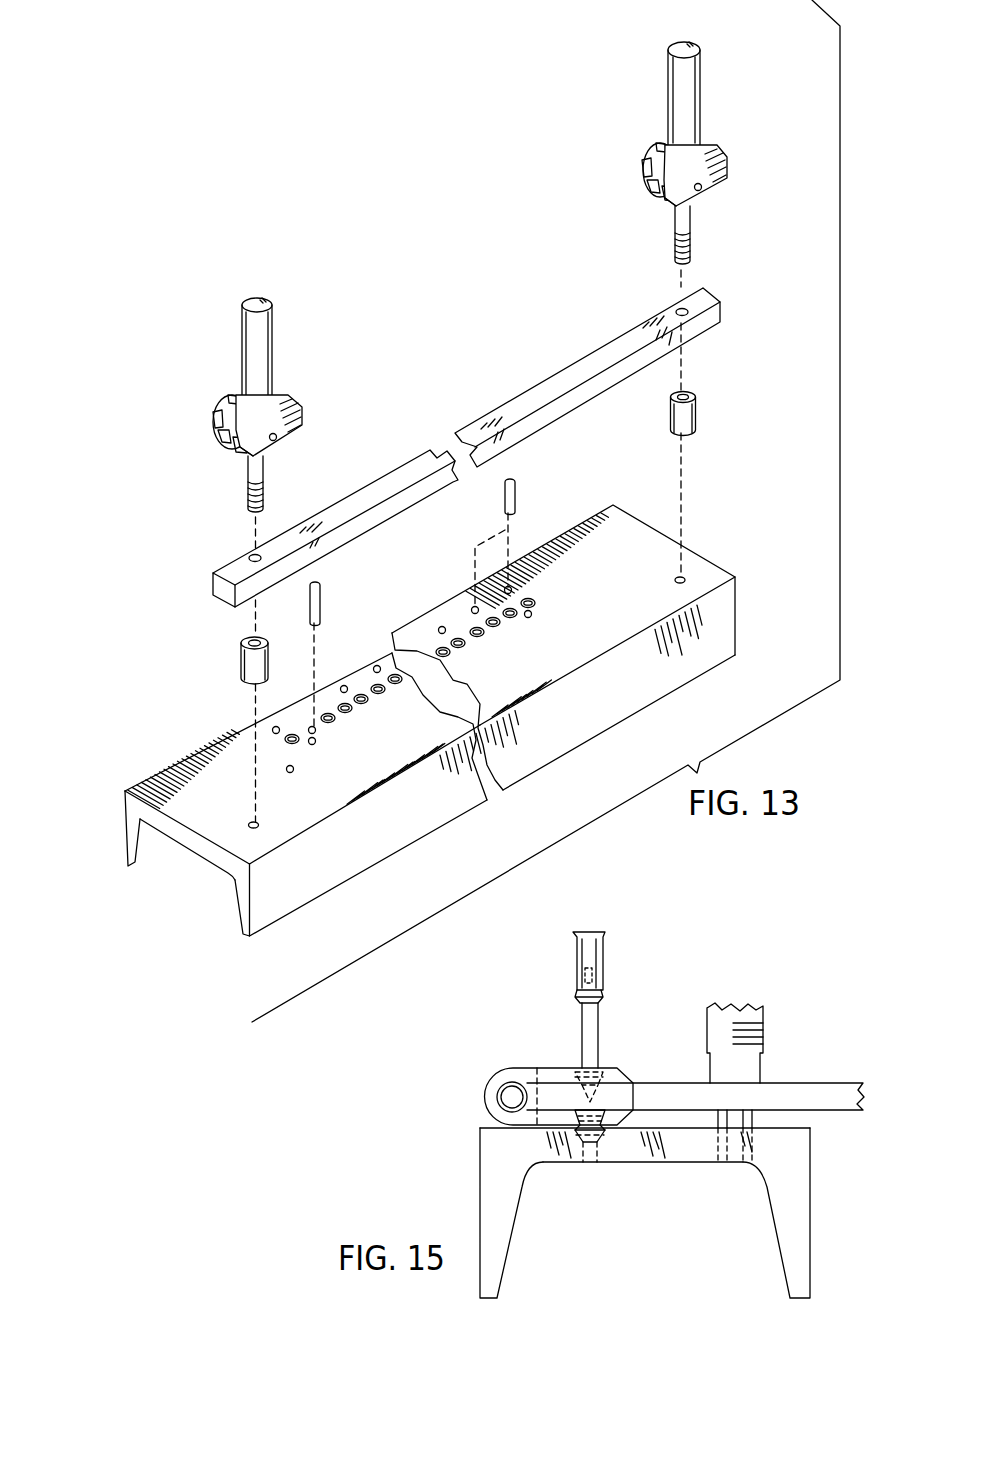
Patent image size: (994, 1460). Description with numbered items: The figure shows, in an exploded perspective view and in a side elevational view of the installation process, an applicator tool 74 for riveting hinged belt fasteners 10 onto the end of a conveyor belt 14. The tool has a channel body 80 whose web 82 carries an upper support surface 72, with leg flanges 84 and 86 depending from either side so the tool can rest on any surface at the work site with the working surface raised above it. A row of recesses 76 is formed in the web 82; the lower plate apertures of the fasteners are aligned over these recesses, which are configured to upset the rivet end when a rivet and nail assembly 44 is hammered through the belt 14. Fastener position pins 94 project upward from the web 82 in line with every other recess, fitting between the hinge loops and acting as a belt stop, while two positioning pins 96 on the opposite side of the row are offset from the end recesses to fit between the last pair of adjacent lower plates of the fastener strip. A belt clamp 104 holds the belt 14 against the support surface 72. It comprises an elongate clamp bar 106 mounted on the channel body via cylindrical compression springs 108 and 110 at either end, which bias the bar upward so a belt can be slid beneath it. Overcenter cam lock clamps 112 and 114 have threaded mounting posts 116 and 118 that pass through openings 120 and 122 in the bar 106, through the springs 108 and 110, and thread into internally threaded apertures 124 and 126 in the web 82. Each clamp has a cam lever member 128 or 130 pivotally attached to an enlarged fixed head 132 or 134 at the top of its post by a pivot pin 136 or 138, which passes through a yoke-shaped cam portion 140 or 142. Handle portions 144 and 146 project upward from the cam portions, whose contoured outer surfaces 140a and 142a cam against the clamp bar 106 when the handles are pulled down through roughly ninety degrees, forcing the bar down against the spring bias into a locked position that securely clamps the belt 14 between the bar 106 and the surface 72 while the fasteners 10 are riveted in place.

In FIG. 15, the hinged belt fastener 10 is at (538, 1063).
In FIG. 15, the conveyor belt 14 is at (818, 1083).
In FIG. 15, the rivet and nail assembly 44 is at (606, 1003).
In FIG. 13, the support surface 72 is at (330, 807).
In FIG. 13, the applicator tool 74 is at (104, 368).
In FIG. 13, the recesses 76 is at (542, 603).
In FIG. 13, the channel body 80 is at (219, 902).
In FIG. 15, the channel body 80 is at (674, 1228).
In FIG. 13, the web 82 is at (195, 842).
In FIG. 15, the web 82 is at (670, 1150).
In FIG. 13, the leg flange 84 is at (126, 845).
In FIG. 15, the leg flange 84 is at (500, 1255).
In FIG. 13, the leg flange 86 is at (243, 915).
In FIG. 15, the leg flange 86 is at (800, 1272).
In FIG. 13, the fastener position pins 94 is at (521, 490).
In FIG. 13, the positioning pins 96 is at (323, 604).
In FIG. 15, the belt clamp 104 is at (770, 1024).
In FIG. 13, the clamp bar 106 is at (425, 462).
In FIG. 13, the cylindrical compression spring 108 is at (243, 660).
In FIG. 13, the cylindrical compression spring 110 is at (700, 415).
In FIG. 13, the overcenter cam lock clamp 112 is at (199, 362).
In FIG. 13, the overcenter cam lock clamp 114 is at (647, 120).
In FIG. 13, the threaded mounting post 116 is at (247, 496).
In FIG. 13, the threaded mounting post 118 is at (672, 246).
In FIG. 13, the opening 120 is at (250, 558).
In FIG. 13, the opening 122 is at (713, 322).
In FIG. 13, the internally threaded aperture 124 is at (257, 829).
In FIG. 13, the internally threaded aperture 126 is at (686, 580).
In FIG. 13, the cam lever member 128 is at (288, 380).
In FIG. 13, the cam lever member 130 is at (717, 131).
In FIG. 13, the fixed head 132 is at (238, 415).
In FIG. 13, the fixed head 134 is at (651, 166).
In FIG. 13, the pivot pin 136 is at (278, 441).
In FIG. 13, the pivot pin 138 is at (703, 191).
In FIG. 13, the yoke-shaped cam portion 140 is at (301, 420).
In FIG. 13, the contoured outer surface 140a is at (239, 452).
In FIG. 13, the yoke-shaped cam portion 142 is at (724, 172).
In FIG. 13, the contoured outer surface 142a is at (667, 196).
In FIG. 13, the handle portion 144 is at (265, 308).
In FIG. 13, the handle portion 146 is at (701, 78).